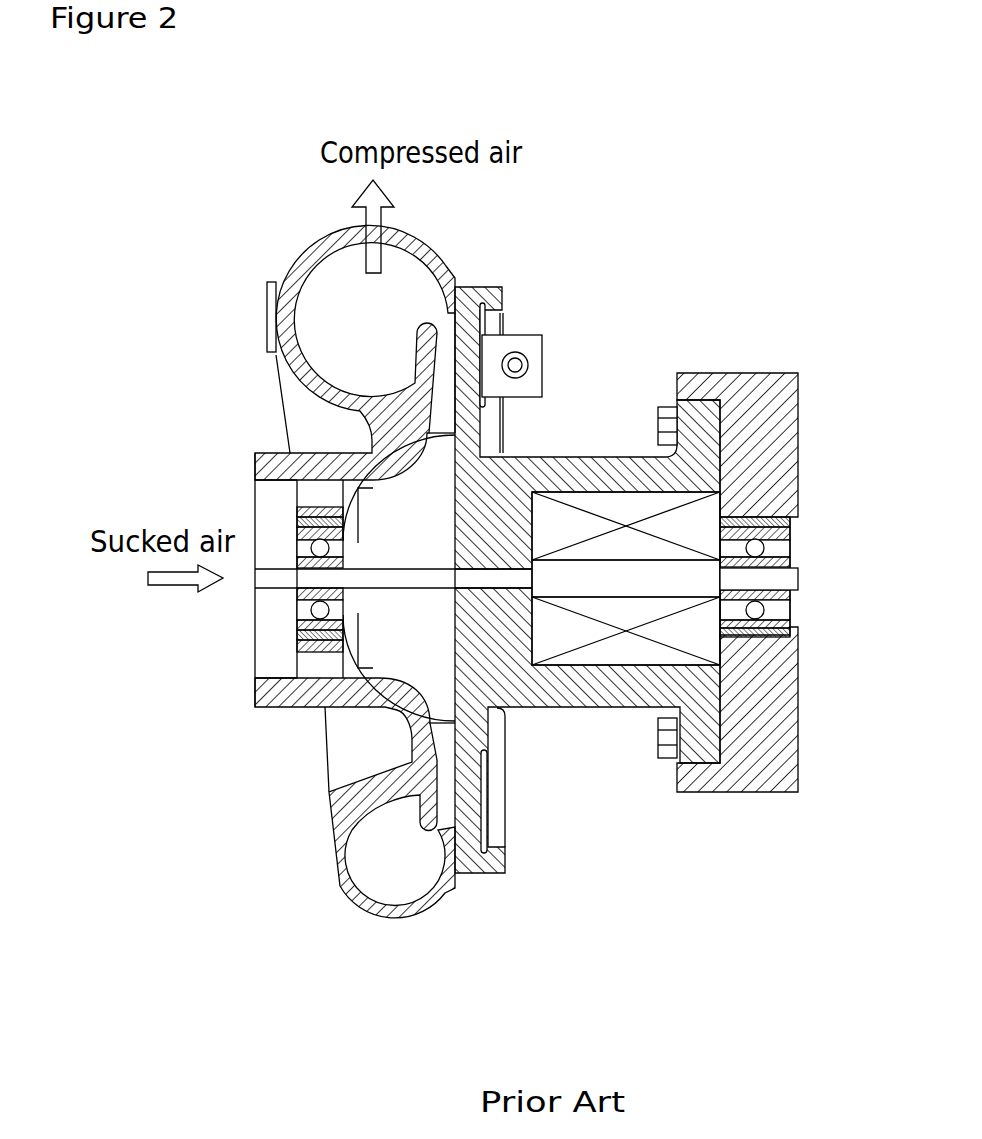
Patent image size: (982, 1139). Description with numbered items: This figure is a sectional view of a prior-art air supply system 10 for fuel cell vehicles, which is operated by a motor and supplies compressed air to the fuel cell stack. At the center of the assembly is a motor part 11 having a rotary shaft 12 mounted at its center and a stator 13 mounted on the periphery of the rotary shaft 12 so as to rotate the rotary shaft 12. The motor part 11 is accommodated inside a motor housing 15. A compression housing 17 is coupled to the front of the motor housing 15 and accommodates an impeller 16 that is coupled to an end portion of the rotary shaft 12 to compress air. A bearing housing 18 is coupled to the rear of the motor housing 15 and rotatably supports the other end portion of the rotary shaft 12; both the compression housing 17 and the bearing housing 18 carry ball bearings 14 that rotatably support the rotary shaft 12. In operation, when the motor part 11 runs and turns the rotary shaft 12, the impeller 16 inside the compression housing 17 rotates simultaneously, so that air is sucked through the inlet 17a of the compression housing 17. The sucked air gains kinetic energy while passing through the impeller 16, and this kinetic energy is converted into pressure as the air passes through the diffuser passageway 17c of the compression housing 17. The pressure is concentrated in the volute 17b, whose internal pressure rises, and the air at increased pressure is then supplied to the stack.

The air supply system 10 is at (203, 232).
The motor part 11 is at (663, 326).
The rotary shaft 12 is at (582, 577).
The stator 13 is at (622, 507).
The ball bearings 14 is at (320, 611).
The motor housing 15 is at (548, 470).
The impeller 16 is at (427, 632).
The compression housing 17 is at (330, 240).
The inlet 17a is at (275, 462).
The volute 17b is at (340, 323).
The diffuser passageway 17c is at (444, 357).
The bearing housing 18 is at (758, 407).